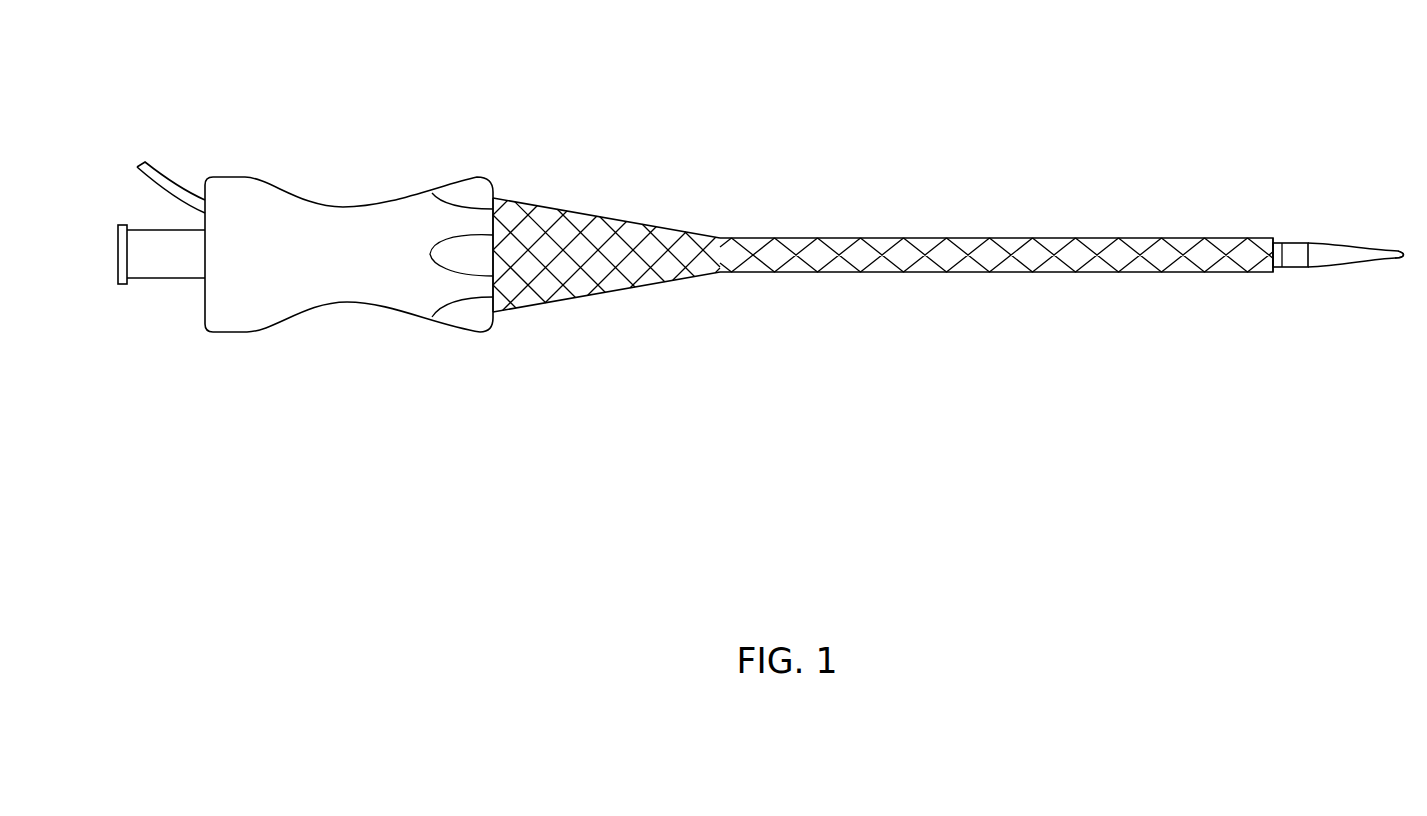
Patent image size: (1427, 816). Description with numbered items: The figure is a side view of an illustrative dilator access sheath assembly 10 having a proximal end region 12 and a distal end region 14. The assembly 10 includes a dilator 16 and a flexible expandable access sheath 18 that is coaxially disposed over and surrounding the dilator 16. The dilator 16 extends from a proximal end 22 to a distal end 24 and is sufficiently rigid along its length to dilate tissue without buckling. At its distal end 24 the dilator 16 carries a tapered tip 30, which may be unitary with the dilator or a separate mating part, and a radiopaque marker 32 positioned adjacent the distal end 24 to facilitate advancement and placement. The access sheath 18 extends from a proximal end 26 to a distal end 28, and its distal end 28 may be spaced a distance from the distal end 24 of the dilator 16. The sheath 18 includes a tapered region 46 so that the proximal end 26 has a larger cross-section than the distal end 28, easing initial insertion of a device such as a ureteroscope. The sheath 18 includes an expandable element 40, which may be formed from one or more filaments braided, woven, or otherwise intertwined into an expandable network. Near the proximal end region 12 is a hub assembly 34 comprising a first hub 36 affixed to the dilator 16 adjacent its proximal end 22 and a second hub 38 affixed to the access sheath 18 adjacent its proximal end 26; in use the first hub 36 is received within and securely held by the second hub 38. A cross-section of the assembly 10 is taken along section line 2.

The dilator access sheath assembly 10 is at (1027, 100).
The proximal end region 12 is at (455, 122).
The distal end region 14 is at (1278, 172).
The dilator 16 is at (1300, 268).
The flexible expandable access sheath 18 is at (872, 237).
The proximal end 22 is at (123, 285).
The distal end 24 is at (1403, 257).
The proximal end 26 is at (493, 312).
The distal end 28 is at (1276, 274).
The tapered tip 30 is at (1360, 247).
The radiopaque marker 32 is at (1297, 246).
The hub assembly 34 is at (333, 343).
The first hub 36 is at (165, 183).
The second hub 38 is at (327, 207).
The expandable element 40 is at (723, 237).
The tapered region 46 is at (583, 212).
The section line 2- 2 is at (1075, 203).